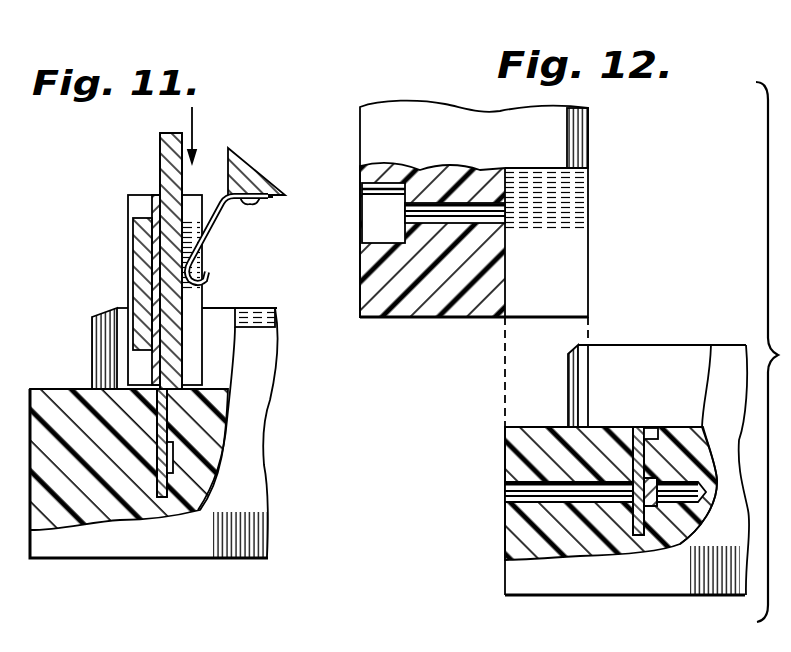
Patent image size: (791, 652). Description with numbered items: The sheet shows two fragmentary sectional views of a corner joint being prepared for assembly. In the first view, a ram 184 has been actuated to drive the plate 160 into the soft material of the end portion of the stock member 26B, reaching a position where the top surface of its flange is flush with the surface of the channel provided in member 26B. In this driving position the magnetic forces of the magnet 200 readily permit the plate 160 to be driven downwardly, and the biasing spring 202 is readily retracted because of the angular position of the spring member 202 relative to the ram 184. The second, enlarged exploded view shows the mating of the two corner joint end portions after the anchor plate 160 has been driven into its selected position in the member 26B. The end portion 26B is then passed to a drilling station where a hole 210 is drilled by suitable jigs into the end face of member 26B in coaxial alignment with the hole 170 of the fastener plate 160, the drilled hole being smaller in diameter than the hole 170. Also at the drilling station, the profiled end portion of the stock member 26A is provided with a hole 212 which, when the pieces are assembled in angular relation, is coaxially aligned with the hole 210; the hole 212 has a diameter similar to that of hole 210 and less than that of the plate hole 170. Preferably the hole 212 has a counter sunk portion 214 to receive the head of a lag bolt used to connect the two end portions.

In FIG. 12, the stock member 26A is at (408, 127).
In FIG. 11, the stock member 26B is at (253, 477).
In FIG. 12, the stock member 26B is at (728, 365).
In FIG. 11, the plate 160 is at (157, 490).
In FIG. 12, the plate 160 is at (633, 535).
In FIG. 12, the hole 170 is at (662, 483).
In FIG. 11, the ram 184 is at (172, 151).
In FIG. 11, the magnet 200 is at (143, 256).
In FIG. 11, the biasing spring 202 is at (217, 220).
In FIG. 12, the hole 210 is at (520, 493).
In FIG. 12, the hole 212 is at (485, 222).
In FIG. 12, the counter sunk portion 214 is at (383, 228).